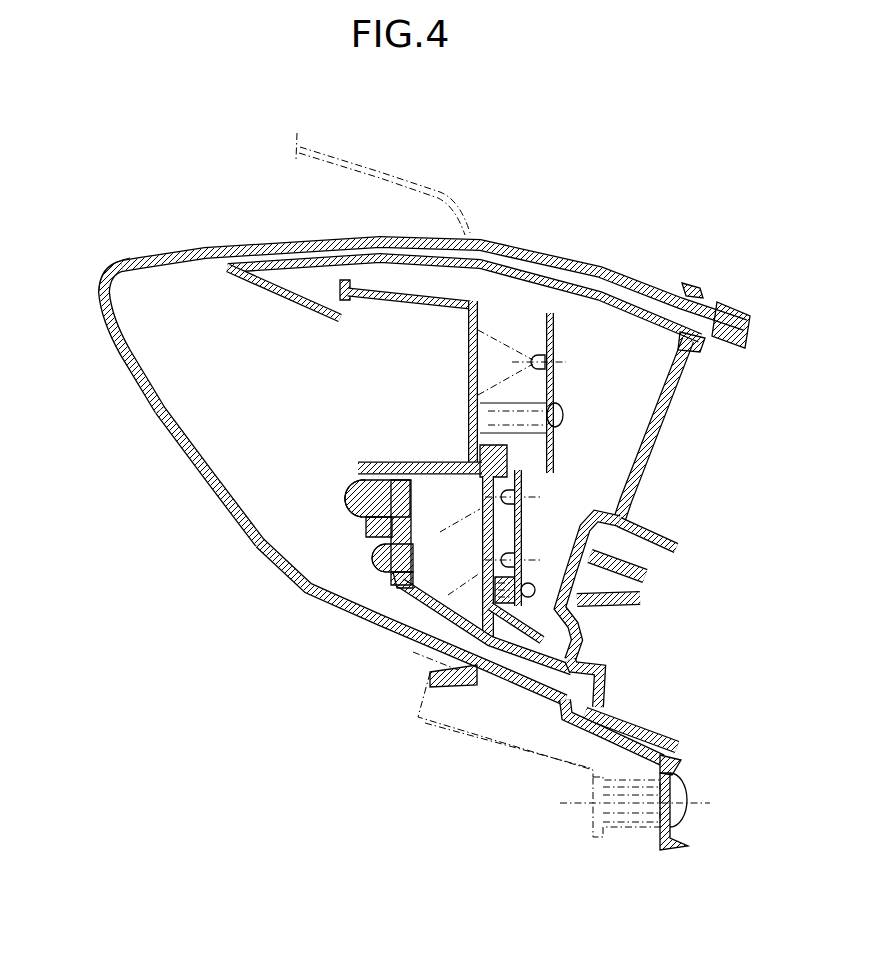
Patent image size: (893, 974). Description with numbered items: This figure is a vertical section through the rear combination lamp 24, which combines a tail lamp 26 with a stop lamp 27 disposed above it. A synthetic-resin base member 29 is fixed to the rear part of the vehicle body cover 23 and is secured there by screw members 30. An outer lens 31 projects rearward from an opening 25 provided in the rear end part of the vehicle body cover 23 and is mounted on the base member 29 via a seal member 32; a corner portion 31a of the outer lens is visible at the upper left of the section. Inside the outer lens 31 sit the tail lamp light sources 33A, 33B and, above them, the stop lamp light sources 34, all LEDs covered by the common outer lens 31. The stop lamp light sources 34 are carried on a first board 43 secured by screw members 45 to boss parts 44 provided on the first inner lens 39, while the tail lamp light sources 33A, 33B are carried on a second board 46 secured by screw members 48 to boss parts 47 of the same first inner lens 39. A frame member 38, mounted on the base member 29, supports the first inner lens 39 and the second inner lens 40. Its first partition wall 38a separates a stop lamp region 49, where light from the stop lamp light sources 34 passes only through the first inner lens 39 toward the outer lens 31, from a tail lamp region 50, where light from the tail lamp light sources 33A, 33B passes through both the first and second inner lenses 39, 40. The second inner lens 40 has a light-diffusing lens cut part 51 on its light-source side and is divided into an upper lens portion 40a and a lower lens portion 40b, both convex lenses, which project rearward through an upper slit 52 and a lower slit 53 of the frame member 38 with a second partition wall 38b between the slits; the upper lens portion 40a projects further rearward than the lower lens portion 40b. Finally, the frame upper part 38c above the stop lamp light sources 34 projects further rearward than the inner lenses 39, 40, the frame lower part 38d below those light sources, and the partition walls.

The vehicle body cover 23 is at (372, 165).
The rear combination lamp 24 is at (208, 246).
The opening 25 is at (476, 233).
The tail lamp 26 is at (295, 587).
The stop lamp 27 is at (212, 492).
The base member 29 is at (660, 420).
The screw member 30 is at (688, 801).
The outer lens 31 is at (151, 412).
The lens corner portion 31a is at (124, 266).
The seal member 32 is at (735, 310).
The tail lamp light source 33A is at (483, 497).
The tail lamp light source 33B is at (483, 565).
The stop lamp light source 34 is at (532, 358).
The frame member 38 is at (487, 653).
The first partition wall 38a is at (378, 462).
The second partition wall 38b is at (368, 527).
The frame upper part 38c is at (345, 256).
The frame lower part 38d is at (423, 598).
The first inner lens 39 is at (467, 358).
The second inner lens 40 is at (373, 575).
The upper lens portion 40a is at (348, 505).
The lower lens portion 40b is at (376, 562).
The first board 43 is at (557, 383).
The boss part 44 is at (522, 434).
The screw member 45 is at (564, 414).
The second board 46 is at (524, 522).
The boss part 47 is at (508, 612).
The screw member 48 is at (534, 589).
The stop lamp region 49 is at (310, 388).
The tail lamp region 50 is at (327, 554).
The lens cut part 51 is at (480, 540).
The upper slit 52 is at (345, 495).
The lower slit 53 is at (390, 583).